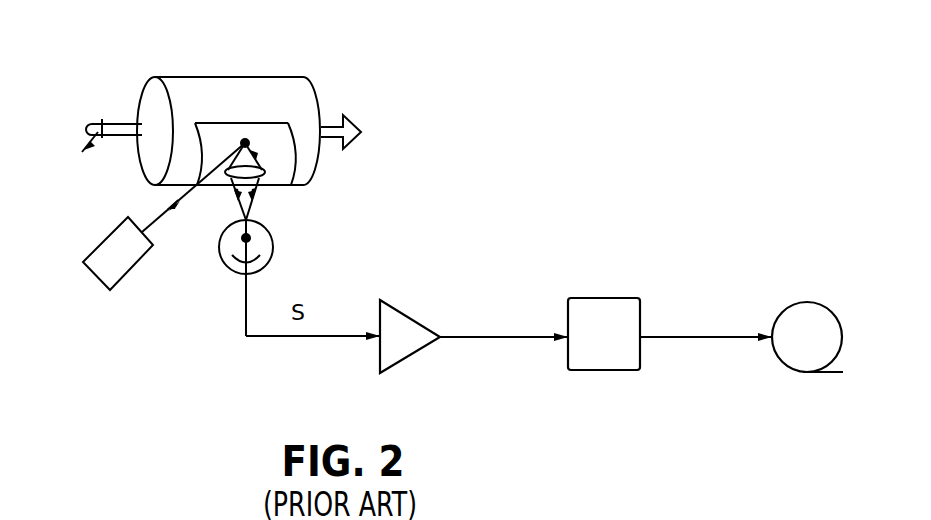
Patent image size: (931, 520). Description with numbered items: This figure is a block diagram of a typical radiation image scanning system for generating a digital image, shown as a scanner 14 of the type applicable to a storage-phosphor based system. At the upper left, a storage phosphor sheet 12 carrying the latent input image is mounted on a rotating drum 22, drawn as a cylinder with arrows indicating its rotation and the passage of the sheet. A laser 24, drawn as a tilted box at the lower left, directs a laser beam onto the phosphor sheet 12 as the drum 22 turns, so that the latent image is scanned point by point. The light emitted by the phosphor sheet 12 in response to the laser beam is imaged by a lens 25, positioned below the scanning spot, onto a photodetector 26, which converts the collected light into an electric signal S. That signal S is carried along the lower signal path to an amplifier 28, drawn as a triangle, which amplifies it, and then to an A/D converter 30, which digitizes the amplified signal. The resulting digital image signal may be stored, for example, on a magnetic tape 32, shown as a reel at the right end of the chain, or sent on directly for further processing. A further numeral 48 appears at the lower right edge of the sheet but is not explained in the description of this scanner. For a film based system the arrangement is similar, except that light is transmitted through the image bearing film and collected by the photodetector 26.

The rotating drum 22 is at (296, 88).
The storage phosphor sheet 12 is at (288, 141).
The lens 25 is at (265, 173).
The laser 24 is at (122, 262).
The photodetector 26 is at (270, 242).
The amplifier 28 is at (414, 332).
The A/D converter 30 is at (621, 302).
The magnetic tape 32 is at (808, 308).
The scanner 14 is at (465, 136).
The reference 48 is at (846, 519).